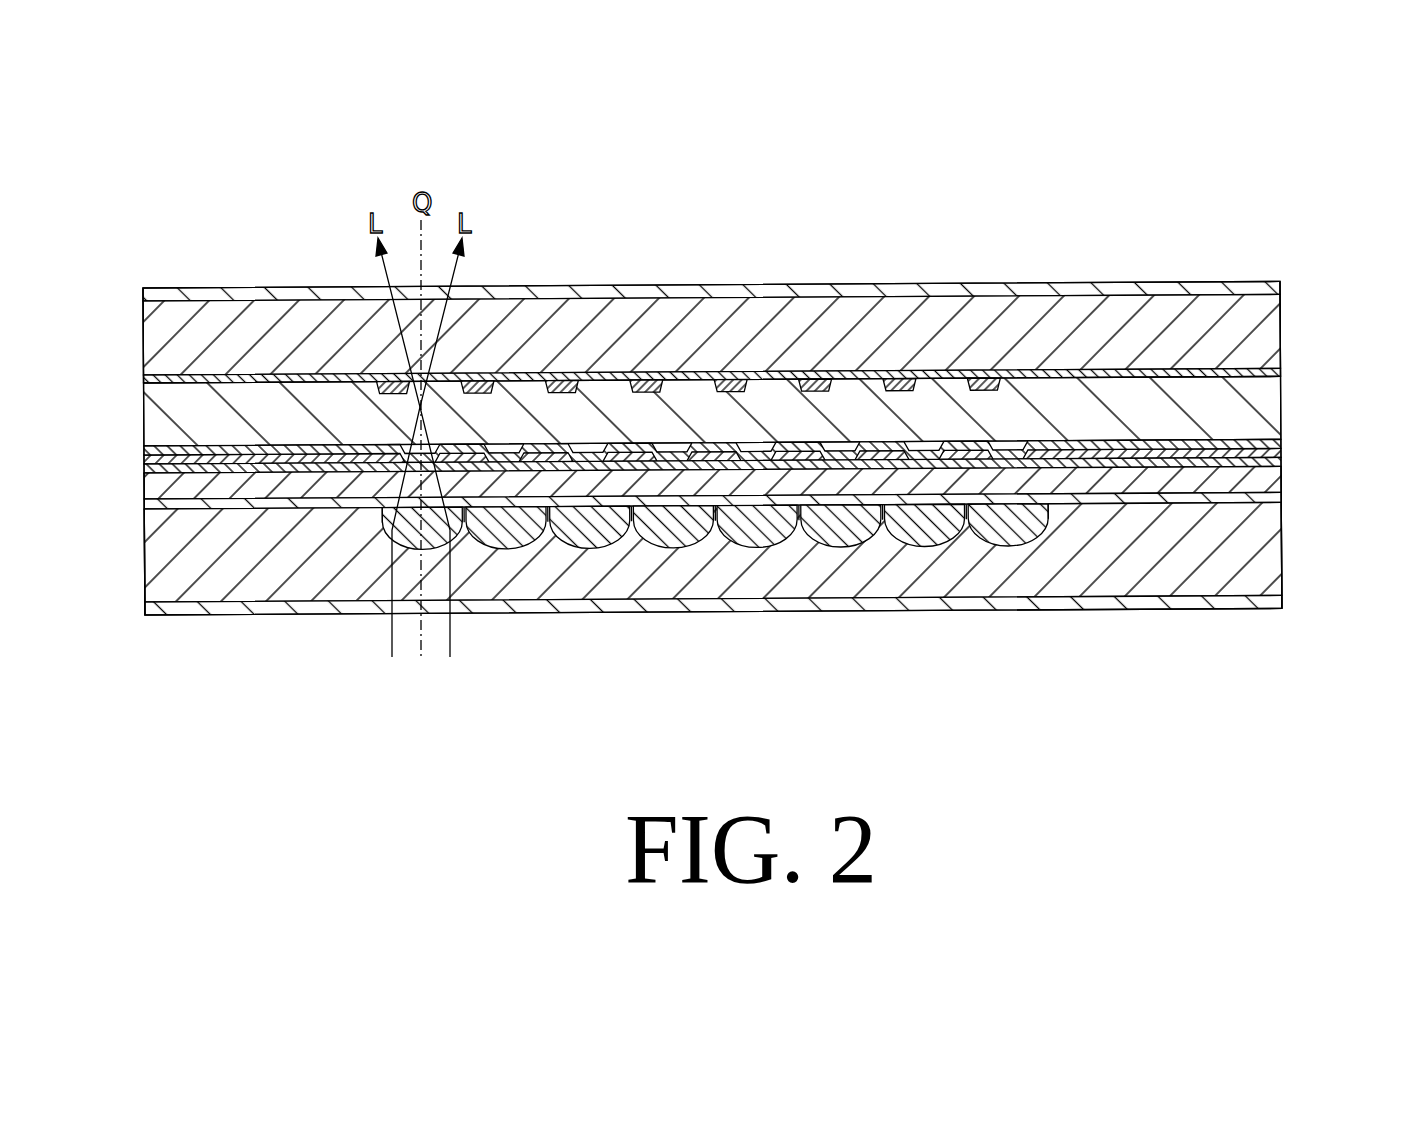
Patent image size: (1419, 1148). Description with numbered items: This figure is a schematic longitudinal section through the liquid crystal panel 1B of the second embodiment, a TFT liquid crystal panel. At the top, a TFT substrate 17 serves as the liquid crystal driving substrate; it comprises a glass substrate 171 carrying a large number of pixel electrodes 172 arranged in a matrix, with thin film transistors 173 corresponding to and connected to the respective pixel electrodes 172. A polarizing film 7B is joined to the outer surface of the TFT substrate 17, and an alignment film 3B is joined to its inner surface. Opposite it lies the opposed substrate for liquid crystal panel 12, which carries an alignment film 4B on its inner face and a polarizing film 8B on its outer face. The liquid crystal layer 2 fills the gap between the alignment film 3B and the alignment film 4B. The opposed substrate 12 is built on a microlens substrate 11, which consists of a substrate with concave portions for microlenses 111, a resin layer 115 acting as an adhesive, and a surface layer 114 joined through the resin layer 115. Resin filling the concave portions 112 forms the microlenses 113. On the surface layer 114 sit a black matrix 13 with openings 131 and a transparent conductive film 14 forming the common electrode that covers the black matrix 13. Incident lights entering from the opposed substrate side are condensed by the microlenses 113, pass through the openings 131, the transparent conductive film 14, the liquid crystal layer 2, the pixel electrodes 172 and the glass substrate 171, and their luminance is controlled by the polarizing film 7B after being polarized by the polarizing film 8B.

The liquid crystal panel 1B is at (1220, 268).
The TFT substrate 17 is at (130, 332).
The polarizing film 7B is at (1281, 283).
The glass substrate 171 is at (1263, 320).
The alignment film 3B is at (1279, 369).
The alignment film 4B is at (1279, 440).
The liquid crystal layer 2 is at (160, 421).
The transparent conductive film 14 is at (1277, 450).
The black matrix 13 is at (1279, 458).
The surface layer 114 is at (1263, 486).
The resin layer 115 is at (1279, 502).
The substrate with concave portions for microlenses 111 is at (1263, 555).
The opposed substrate for liquid crystal panel 12 is at (1283, 571).
The polarizing film 8B is at (1281, 607).
The microlens substrate 11 is at (122, 473).
The thin film transistor 173 is at (637, 372).
The pixel electrode 172 is at (923, 372).
The microlens 113 is at (552, 560).
The concave portion 112 is at (842, 536).
The opening 131 is at (952, 512).